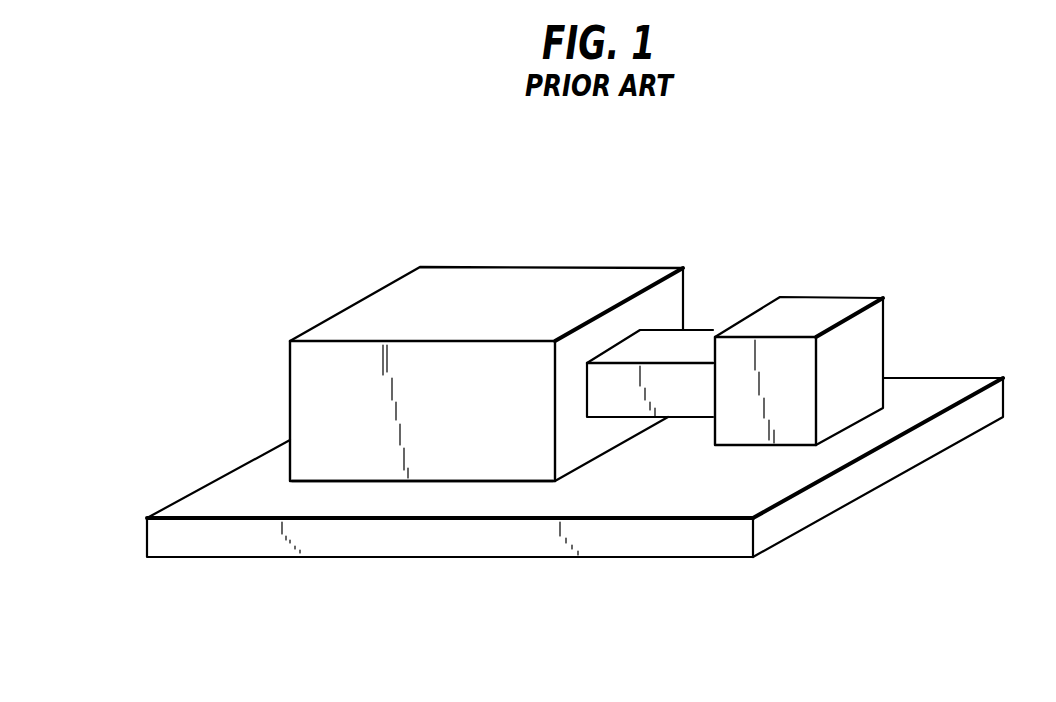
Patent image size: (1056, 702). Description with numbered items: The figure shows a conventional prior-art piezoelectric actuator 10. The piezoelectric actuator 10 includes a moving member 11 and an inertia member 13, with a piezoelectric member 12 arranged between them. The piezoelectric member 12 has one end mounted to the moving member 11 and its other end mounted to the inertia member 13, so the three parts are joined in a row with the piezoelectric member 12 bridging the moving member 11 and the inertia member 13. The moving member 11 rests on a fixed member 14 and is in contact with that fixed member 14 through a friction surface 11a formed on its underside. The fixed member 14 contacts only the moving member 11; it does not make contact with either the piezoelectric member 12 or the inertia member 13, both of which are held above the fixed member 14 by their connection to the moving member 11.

The piezoelectric actuator 10 is at (652, 184).
The moving member 11 is at (447, 290).
The friction surface 11a is at (447, 483).
The piezoelectric member 12 is at (697, 340).
The inertia member 13 is at (850, 303).
The fixed member 14 is at (617, 512).